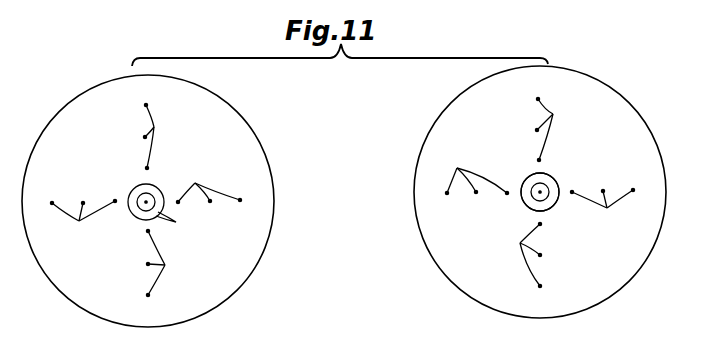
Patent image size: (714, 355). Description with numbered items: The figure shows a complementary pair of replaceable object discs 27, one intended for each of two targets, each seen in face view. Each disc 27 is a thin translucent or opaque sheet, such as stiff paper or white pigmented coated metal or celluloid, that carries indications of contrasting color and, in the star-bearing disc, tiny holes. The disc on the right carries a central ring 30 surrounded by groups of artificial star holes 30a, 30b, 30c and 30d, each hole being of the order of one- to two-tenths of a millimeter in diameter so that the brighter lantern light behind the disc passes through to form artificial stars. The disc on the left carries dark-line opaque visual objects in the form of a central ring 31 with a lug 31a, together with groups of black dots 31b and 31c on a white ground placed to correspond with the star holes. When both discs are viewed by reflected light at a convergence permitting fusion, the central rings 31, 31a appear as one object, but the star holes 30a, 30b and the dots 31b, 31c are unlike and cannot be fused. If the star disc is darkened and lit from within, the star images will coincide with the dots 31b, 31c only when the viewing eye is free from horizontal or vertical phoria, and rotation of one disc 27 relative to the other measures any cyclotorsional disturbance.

The object disc 27 is at (232, 291).
The artificial star hole 30 is at (540, 192).
The star hole 30a is at (473, 171).
The star hole 30b is at (559, 129).
The contact point group 30c is at (602, 209).
The contact point group 30d is at (505, 254).
The concentric circle mark 31 is at (530, 189).
The concentric circle mark 31a is at (168, 210).
The black dot 31b is at (145, 206).
The black dot 31c is at (168, 199).